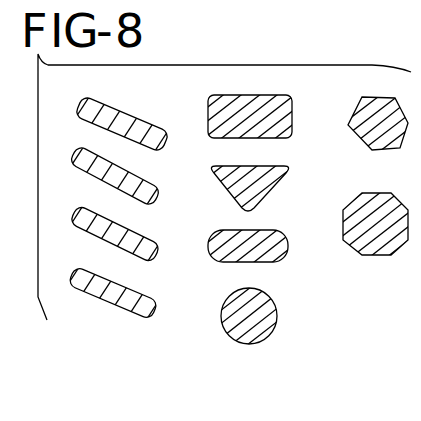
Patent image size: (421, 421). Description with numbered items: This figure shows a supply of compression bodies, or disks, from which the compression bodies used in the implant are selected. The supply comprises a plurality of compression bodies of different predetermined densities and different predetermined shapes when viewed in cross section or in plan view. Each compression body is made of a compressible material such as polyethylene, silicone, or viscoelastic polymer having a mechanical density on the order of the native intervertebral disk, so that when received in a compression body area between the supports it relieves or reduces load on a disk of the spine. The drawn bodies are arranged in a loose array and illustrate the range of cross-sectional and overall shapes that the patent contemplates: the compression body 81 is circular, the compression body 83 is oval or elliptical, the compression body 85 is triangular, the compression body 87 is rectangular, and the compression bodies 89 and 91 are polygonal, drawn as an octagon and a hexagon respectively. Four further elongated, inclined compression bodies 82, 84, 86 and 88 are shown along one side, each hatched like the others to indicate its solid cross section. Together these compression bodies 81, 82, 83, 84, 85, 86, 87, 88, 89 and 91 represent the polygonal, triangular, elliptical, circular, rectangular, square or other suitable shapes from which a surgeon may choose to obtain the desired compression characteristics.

The compression body 81 is at (273, 307).
The compression body 82 is at (140, 297).
The compression body 83 is at (277, 232).
The compression body 84 is at (140, 233).
The compression body 85 is at (280, 180).
The compression body 86 is at (138, 180).
The compression body 87 is at (289, 108).
The compression body 88 is at (123, 110).
The compression body 89 is at (370, 250).
The compression body 91 is at (366, 141).